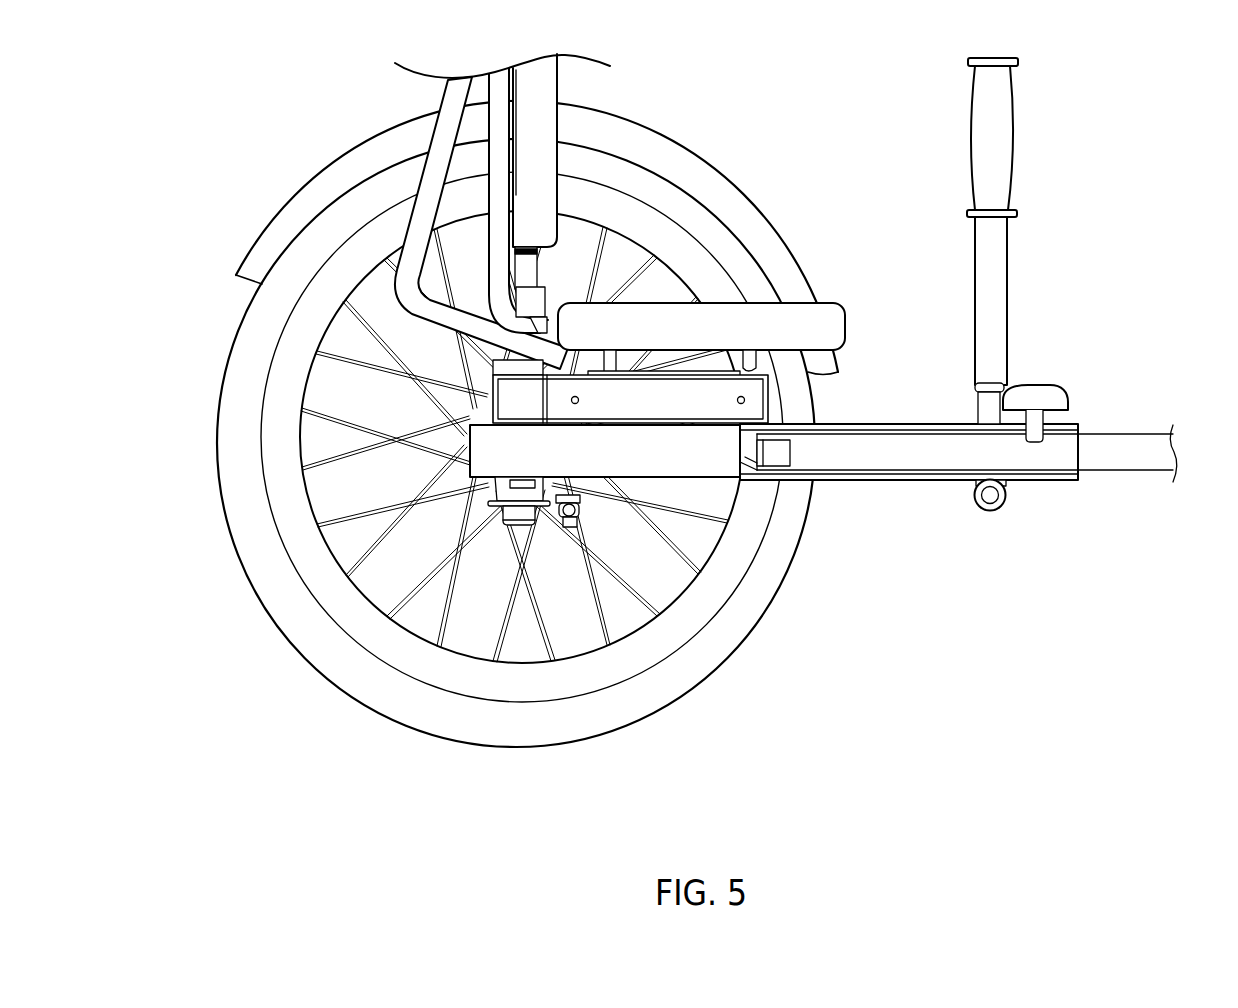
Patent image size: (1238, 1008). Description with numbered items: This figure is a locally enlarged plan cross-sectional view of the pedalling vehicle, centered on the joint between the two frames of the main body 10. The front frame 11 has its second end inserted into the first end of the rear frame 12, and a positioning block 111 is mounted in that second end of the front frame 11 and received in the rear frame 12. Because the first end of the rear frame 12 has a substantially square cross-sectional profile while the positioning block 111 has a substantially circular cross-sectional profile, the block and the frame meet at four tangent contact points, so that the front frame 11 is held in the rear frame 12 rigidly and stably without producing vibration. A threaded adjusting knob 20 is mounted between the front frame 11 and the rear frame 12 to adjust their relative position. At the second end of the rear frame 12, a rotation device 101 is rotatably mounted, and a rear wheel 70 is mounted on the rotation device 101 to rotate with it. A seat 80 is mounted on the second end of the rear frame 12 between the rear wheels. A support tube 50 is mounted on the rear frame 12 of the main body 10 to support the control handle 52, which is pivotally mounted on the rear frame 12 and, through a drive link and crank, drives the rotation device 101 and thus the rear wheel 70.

The main body 10 is at (863, 493).
The front frame 11 is at (1128, 452).
The rear frame 12 is at (503, 448).
The threaded adjusting knob 20 is at (1042, 393).
The support tube 50 is at (986, 503).
The control handle 52 is at (987, 283).
The rear wheel 70 is at (415, 665).
The seat 80 is at (533, 140).
The rotation device 101 is at (513, 495).
The positioning block 111 is at (738, 480).